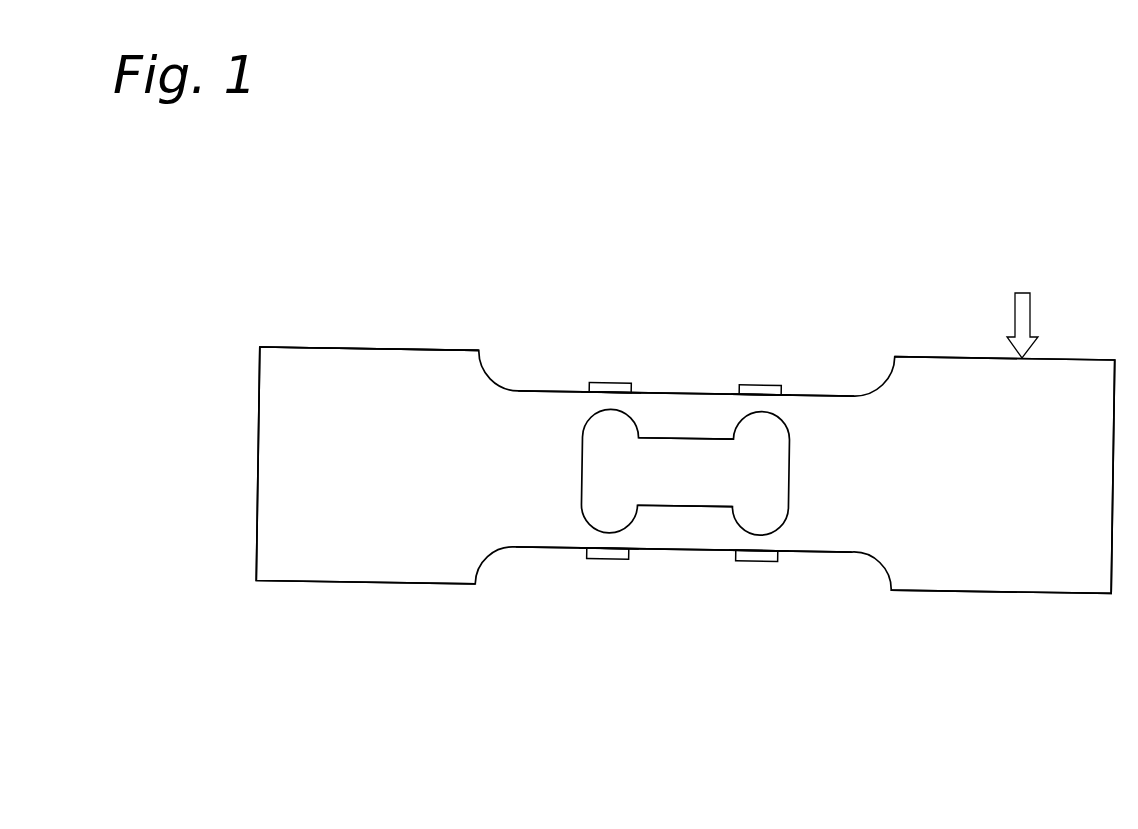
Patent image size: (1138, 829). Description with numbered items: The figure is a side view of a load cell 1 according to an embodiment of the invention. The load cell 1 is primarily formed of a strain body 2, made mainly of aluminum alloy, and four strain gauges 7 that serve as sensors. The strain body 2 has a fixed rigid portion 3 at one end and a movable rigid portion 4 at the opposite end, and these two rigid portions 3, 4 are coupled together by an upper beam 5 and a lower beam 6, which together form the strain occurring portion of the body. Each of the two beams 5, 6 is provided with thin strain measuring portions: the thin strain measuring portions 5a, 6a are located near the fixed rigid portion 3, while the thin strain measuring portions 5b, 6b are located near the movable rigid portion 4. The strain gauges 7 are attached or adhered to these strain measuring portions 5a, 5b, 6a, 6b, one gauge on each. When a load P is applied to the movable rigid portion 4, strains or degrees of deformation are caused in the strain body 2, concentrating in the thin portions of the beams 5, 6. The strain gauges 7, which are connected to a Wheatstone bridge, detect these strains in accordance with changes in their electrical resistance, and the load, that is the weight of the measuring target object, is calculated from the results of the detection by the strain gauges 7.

The load cell 1 is at (838, 210).
The strain body 2 is at (373, 348).
The fixed rigid portion 3 is at (342, 558).
The movable rigid portion 4 is at (1027, 565).
The upper beam 5 is at (693, 413).
The thin strain measuring portion 5a is at (602, 398).
The thin strain measuring portion 5b is at (763, 403).
The lower beam 6 is at (683, 540).
The thin strain measuring portion 6a is at (608, 540).
The thin strain measuring portion 6b is at (762, 543).
The strain gauge 7 is at (603, 378).
The load P is at (1022, 301).